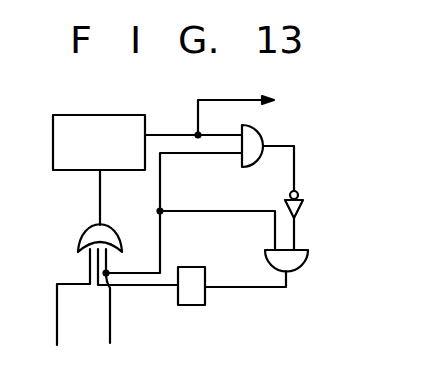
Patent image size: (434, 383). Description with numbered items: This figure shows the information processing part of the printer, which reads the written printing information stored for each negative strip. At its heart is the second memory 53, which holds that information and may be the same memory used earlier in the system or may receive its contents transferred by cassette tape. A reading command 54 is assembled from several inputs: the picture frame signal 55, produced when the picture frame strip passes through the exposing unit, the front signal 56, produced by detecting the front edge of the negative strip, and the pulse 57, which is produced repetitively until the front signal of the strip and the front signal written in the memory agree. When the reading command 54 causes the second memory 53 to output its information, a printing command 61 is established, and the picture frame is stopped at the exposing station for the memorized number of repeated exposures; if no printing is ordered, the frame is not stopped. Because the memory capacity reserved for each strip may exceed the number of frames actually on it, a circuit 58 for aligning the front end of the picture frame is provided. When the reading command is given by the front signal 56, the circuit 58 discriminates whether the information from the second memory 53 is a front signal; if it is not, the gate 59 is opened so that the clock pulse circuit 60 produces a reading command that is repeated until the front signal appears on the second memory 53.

The second memory 53 is at (100, 113).
The reading command 54 is at (86, 229).
The picture frame signal 55 is at (68, 310).
The front signal 56 is at (171, 262).
The pulse 57 is at (143, 290).
The circuit for aligning the front end 58 is at (262, 136).
The gate 59 is at (309, 259).
The clock pulse circuit 60 is at (192, 306).
The printing command 61 is at (230, 99).